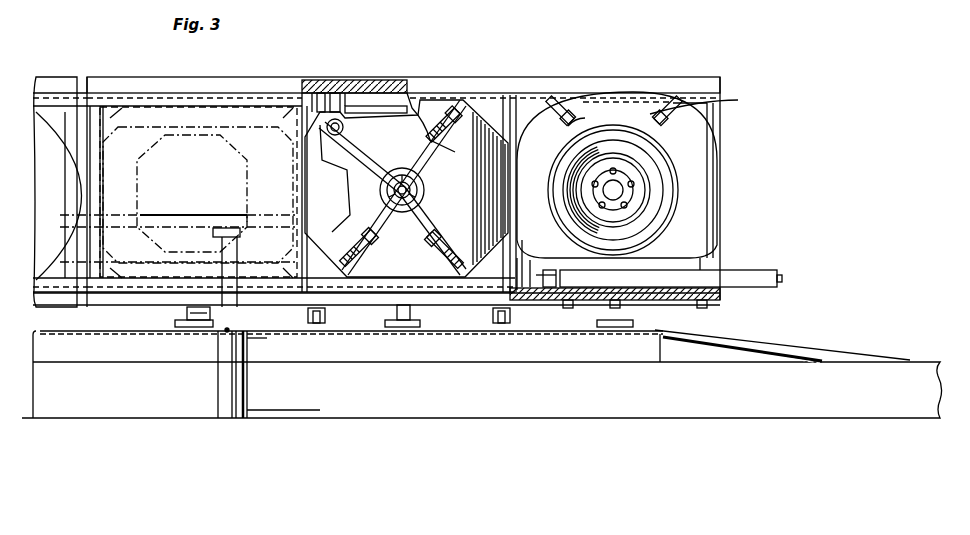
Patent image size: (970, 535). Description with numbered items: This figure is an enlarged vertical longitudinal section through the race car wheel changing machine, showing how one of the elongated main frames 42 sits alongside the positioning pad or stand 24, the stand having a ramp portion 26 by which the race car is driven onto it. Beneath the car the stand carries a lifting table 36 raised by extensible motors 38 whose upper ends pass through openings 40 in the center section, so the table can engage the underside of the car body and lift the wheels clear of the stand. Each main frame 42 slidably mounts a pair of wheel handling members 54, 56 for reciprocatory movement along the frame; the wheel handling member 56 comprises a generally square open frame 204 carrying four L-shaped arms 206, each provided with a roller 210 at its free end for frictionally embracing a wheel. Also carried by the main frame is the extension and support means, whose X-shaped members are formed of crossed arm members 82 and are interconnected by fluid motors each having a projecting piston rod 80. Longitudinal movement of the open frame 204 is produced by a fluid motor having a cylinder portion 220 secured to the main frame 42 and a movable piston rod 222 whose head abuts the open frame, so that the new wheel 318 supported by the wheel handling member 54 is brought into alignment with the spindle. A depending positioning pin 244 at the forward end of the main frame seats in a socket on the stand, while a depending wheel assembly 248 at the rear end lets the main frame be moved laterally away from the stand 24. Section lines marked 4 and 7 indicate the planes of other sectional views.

The lifting table 36 is at (166, 222).
The main frame 42 is at (625, 80).
The piston rod 222 is at (326, 82).
The cylinder portion 220 is at (374, 96).
The wheel handling member 56 is at (446, 91).
The crossed arm members 82 is at (370, 217).
The piston rod 80 is at (345, 128).
The L-shaped arm 206 is at (667, 108).
The section line 7- 7 is at (403, 143).
The open frame 204 is at (522, 152).
The wheel handling member 54 is at (717, 143).
The new wheel 318 is at (700, 205).
The roller 210 is at (664, 106).
The depending positioning pin 244 is at (418, 326).
The depending wheel assembly 248 is at (328, 313).
The positioning pad or stand 24 is at (762, 338).
The ramp portion 26 is at (805, 354).
The extensible motor 38 is at (232, 398).
The opening 40 is at (225, 331).
The section line 4- 4 is at (512, 67).